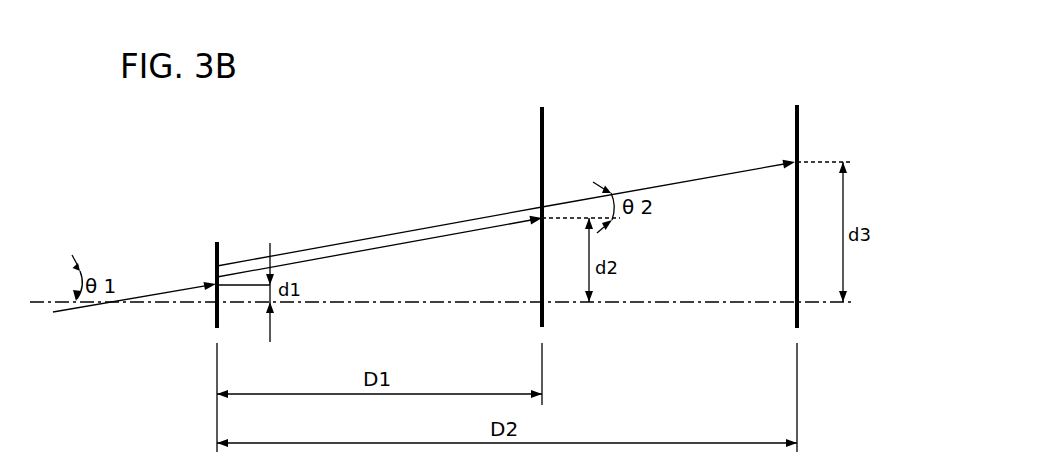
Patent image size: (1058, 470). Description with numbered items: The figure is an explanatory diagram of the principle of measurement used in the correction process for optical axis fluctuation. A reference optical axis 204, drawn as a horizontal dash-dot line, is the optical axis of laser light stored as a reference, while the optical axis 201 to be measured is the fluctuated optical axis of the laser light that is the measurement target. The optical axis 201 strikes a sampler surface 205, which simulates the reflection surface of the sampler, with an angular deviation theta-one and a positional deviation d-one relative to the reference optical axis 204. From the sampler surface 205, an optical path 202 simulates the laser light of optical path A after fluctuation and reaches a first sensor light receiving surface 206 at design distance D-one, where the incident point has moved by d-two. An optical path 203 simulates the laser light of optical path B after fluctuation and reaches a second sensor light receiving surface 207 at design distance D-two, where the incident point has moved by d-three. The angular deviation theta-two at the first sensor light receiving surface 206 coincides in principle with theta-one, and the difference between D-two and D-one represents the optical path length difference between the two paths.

The optical axis to be measured 201 is at (178, 288).
The optical path 202 is at (412, 242).
The optical path 203 is at (683, 180).
The reference optical axis 204 is at (43, 300).
The sampler surface 205 is at (217, 240).
The first sensor light receiving surface 206 is at (540, 133).
The second sensor light receiving surface 207 is at (795, 115).